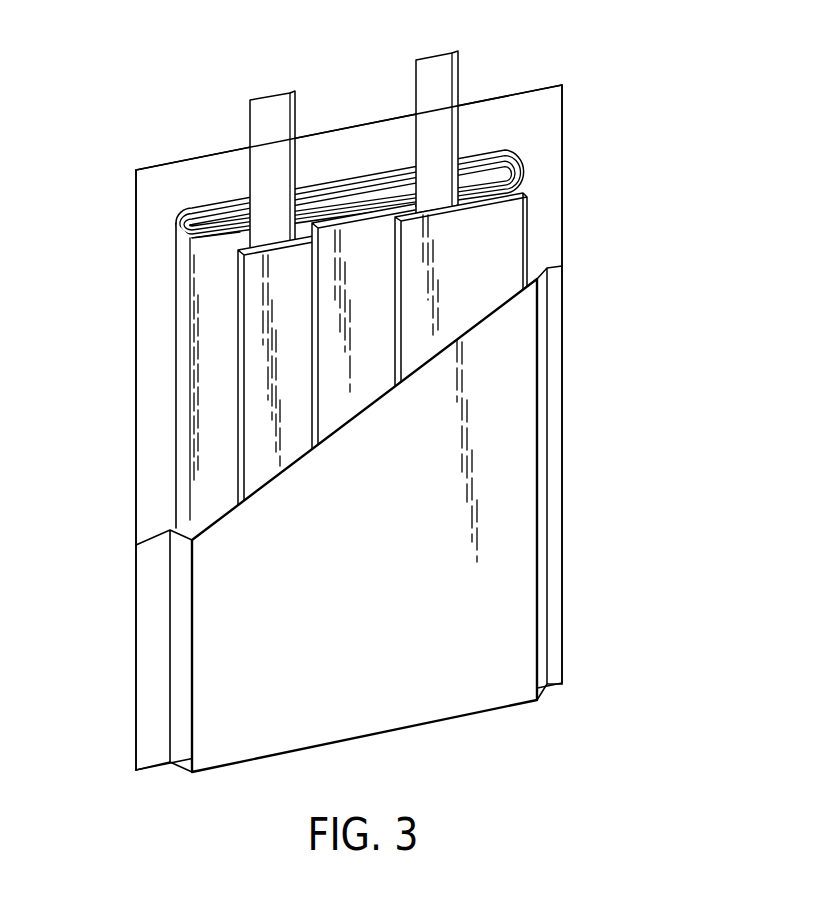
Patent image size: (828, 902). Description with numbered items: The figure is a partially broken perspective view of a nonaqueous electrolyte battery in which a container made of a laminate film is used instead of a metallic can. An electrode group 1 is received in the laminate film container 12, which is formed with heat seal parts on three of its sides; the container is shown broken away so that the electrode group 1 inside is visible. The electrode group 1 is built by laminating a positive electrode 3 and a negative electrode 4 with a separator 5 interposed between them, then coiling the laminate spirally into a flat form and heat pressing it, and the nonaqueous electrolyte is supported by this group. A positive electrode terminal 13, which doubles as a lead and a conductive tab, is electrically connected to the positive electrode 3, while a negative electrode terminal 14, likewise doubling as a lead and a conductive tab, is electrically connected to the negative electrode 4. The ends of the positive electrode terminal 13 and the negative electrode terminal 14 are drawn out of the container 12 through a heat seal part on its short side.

The electrode group 1 is at (411, 311).
The positive electrode 3 is at (287, 375).
The negative electrode 4 is at (611, 352).
The separator 5 is at (378, 287).
The laminate film container 12 is at (507, 527).
The positive electrode terminal 13 is at (270, 108).
The negative electrode terminal 14 is at (436, 68).